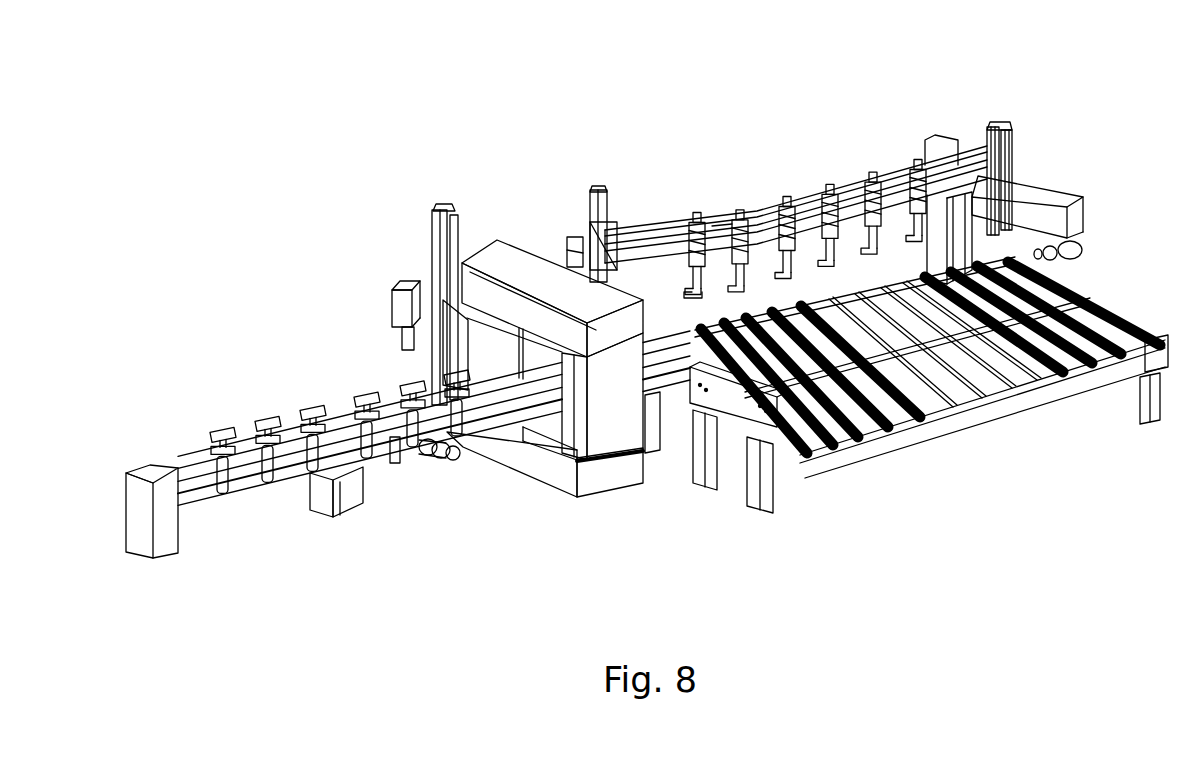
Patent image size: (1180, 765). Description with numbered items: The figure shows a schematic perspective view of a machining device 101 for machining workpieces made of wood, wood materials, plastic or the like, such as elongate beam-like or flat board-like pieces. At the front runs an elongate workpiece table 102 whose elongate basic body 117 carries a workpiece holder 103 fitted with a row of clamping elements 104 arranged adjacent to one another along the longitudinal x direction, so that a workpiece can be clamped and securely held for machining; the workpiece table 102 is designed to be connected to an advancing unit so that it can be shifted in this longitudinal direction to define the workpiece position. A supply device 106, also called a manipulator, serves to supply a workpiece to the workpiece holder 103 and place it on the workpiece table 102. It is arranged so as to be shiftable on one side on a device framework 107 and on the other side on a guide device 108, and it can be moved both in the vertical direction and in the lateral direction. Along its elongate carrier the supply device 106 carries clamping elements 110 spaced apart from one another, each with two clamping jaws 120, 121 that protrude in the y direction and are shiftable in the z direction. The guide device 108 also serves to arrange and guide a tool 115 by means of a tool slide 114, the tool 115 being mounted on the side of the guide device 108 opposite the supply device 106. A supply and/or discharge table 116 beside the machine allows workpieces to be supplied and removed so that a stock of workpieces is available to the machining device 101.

The machining device 101 is at (988, 106).
The workpiece table 102 is at (397, 447).
The workpiece holder 103 is at (290, 500).
The clamping elements 104 is at (220, 427).
The supply device 106 is at (760, 207).
The device framework 107 is at (1050, 203).
The guide device 108 is at (513, 243).
The clamping elements 110 is at (690, 222).
The tool slide 114 is at (430, 250).
The tool 115 is at (402, 345).
The supply and/or discharge table 116 is at (1130, 272).
The basic body 117 is at (248, 497).
The clamping jaw 120 is at (727, 289).
The clamping jaw 121 is at (728, 213).